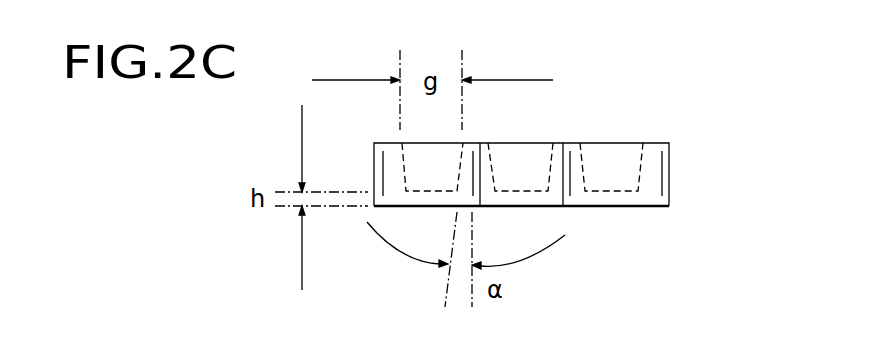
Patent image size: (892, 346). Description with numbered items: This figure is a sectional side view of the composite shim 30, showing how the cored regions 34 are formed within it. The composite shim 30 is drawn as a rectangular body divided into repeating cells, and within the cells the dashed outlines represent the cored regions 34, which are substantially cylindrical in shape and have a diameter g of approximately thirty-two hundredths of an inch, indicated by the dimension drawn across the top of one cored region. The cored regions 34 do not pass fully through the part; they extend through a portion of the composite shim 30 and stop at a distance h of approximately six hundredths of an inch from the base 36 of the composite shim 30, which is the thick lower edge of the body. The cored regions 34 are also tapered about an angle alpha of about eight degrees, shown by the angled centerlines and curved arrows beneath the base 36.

The composite shim 30 is at (655, 90).
The cored regions 34 is at (442, 162).
The base 36 is at (630, 207).